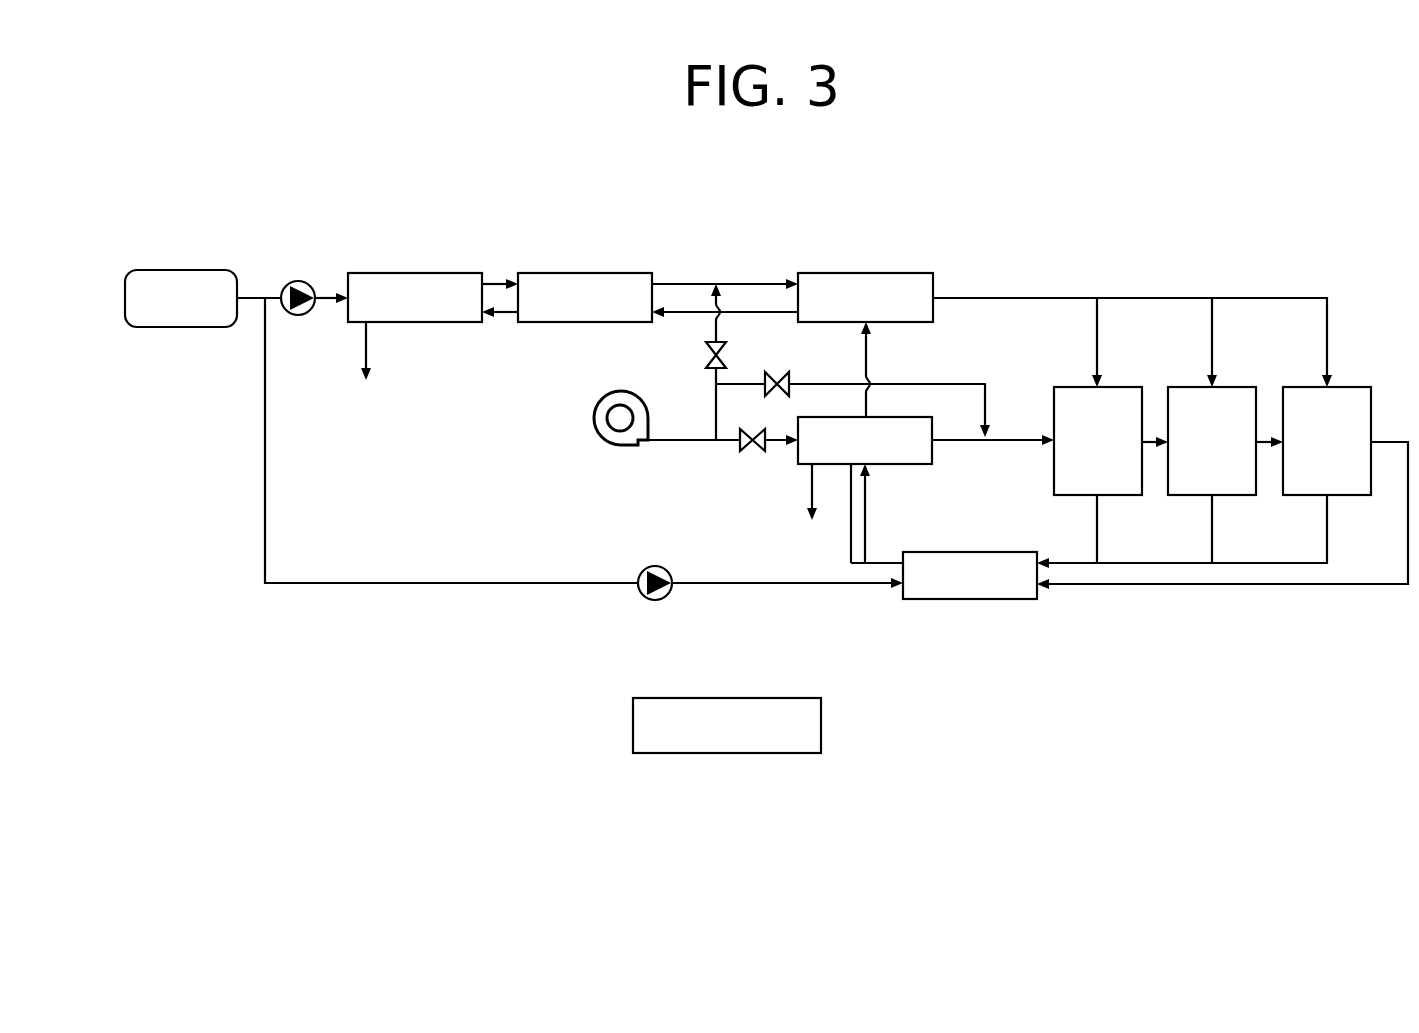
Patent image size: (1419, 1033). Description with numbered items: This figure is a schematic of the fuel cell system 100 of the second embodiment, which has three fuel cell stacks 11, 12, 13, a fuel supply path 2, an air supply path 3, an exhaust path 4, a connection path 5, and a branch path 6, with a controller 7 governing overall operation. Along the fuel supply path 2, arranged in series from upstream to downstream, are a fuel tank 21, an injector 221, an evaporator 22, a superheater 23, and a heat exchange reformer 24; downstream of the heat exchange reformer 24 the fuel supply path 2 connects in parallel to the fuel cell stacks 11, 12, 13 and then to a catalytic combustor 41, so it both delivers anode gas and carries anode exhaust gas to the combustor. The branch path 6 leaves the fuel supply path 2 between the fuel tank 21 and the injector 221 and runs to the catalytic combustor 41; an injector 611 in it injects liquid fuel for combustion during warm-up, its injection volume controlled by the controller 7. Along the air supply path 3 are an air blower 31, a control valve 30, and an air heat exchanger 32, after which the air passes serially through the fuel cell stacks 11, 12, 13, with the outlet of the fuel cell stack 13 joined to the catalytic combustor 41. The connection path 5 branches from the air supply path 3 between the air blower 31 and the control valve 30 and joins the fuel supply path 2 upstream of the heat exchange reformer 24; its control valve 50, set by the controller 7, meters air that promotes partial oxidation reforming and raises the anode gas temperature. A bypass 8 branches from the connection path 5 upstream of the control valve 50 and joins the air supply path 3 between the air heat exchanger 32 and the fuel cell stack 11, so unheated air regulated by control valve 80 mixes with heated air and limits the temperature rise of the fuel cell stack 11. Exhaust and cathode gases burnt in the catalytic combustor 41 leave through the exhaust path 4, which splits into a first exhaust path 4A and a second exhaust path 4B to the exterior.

The fuel cell system 100 is at (1284, 203).
The fuel tank 21 is at (183, 270).
The fuel supply path 2 is at (253, 292).
The injector 221 is at (301, 282).
The evaporator 22 is at (440, 273).
The superheater 23 is at (614, 273).
The heat exchange reformer 24 is at (865, 273).
The bypass 8 is at (949, 383).
The control valve 80 is at (780, 374).
The control valve 50 is at (706, 350).
The connection path 5 is at (712, 416).
The air blower 31 is at (620, 448).
The air supply path 3 is at (690, 443).
The control valve 30 is at (745, 452).
The air heat exchanger 32 is at (928, 465).
The first exhaust path 4A is at (868, 514).
The exhaust path 4 is at (880, 555).
The second exhaust path 4B is at (848, 512).
The catalytic combustor 41 is at (982, 600).
The branch path 6 is at (534, 586).
The injector 611 is at (657, 602).
The fuel cell stack 11 is at (1128, 386).
The fuel cell stack 12 is at (1241, 386).
The fuel cell stack 13 is at (1358, 386).
The controller 7 is at (748, 754).